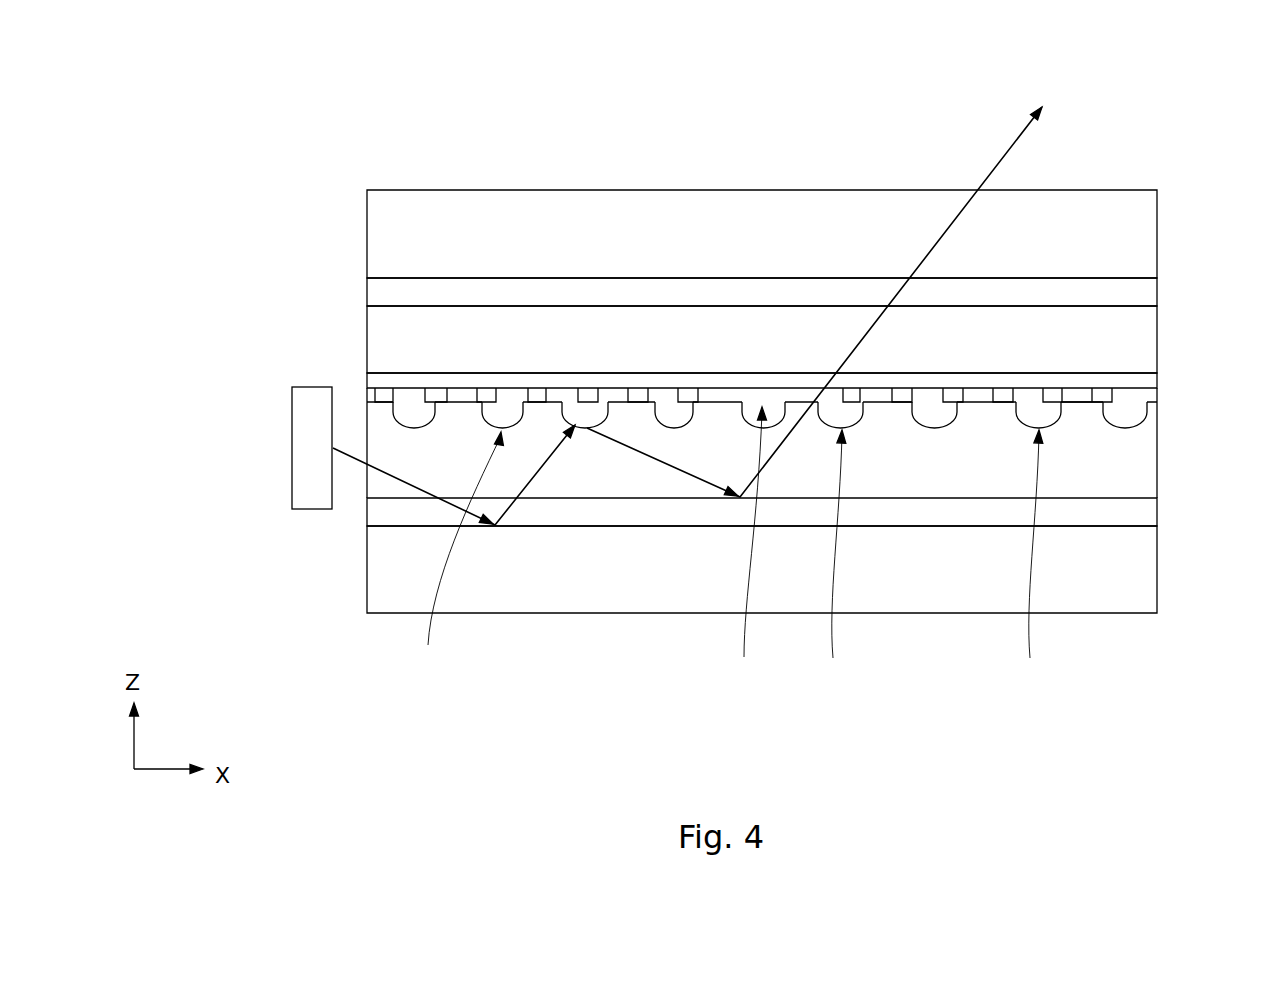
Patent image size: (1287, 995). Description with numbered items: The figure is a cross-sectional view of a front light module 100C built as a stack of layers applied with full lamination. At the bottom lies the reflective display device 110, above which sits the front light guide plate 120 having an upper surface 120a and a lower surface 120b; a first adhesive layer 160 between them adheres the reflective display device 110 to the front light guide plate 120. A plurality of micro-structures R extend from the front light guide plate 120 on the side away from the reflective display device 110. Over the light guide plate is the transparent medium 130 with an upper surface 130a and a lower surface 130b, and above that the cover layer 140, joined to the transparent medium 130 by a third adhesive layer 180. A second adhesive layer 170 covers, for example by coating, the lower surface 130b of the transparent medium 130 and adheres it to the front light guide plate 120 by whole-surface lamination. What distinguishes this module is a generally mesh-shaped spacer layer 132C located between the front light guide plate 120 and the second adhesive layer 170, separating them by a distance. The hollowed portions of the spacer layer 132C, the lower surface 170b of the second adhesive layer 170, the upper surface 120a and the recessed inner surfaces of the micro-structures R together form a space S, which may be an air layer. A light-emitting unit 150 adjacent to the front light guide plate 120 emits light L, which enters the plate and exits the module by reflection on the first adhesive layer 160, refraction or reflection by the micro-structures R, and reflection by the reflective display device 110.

The front light module 100C is at (241, 63).
The reflective display device 110 is at (1143, 570).
The front light guide plate 120 is at (1143, 451).
The upper surface of the front light guide plate 120a is at (560, 405).
The lower surface of the front light guide plate 120b is at (929, 498).
The transparent medium 130 is at (1143, 341).
The upper surface of the transparent medium 130a is at (678, 306).
The lower surface of the transparent medium 130b is at (807, 373).
The spacer layer 132C is at (1160, 388).
The cover layer 140 is at (1143, 236).
The light-emitting unit 150 is at (292, 449).
The first adhesive layer 160 is at (1143, 511).
The second adhesive layer 170 is at (1150, 383).
The lower surface of the second adhesive layer 170b is at (553, 390).
The third adhesive layer 180 is at (1143, 290).
The light L is at (402, 483).
The micro-structures R is at (732, 561).
The space S is at (751, 550).